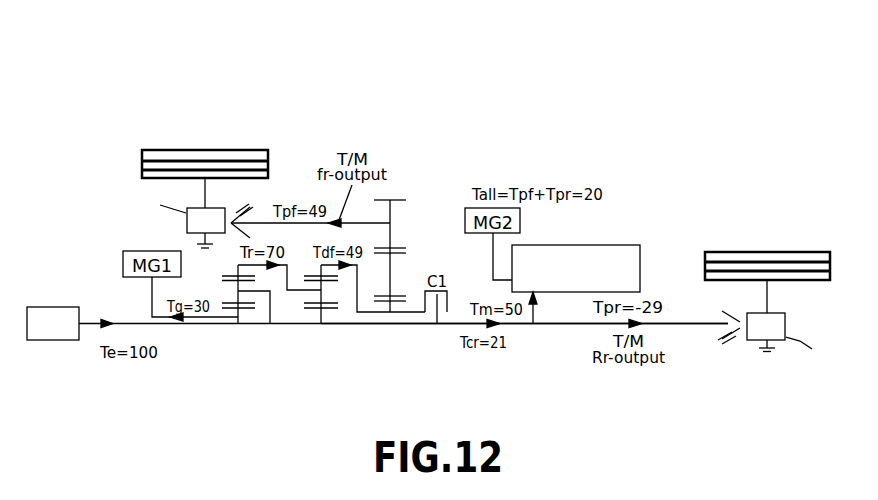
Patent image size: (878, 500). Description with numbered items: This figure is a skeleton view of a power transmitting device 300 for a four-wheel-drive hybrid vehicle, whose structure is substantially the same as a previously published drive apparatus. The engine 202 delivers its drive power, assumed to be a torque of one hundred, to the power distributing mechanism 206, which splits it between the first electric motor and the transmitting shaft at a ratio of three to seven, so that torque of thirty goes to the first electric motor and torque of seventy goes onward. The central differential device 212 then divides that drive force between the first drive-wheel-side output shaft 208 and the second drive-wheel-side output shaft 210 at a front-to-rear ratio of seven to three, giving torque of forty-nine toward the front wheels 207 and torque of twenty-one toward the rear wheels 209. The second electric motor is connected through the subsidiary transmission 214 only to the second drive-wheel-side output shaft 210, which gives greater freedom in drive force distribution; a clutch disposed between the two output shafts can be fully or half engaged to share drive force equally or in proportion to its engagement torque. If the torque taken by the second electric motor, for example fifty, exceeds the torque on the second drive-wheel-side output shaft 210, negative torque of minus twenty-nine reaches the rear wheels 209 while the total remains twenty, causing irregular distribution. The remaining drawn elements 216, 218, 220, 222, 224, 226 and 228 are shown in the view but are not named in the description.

The power transmitting device 300 is at (444, 74).
The engine 202 is at (53, 340).
The power distributing mechanism 206 is at (237, 342).
The front wheels 207 is at (248, 149).
The first drive-wheel-side output shaft 208 is at (358, 269).
The rear wheels 209 is at (728, 252).
The second drive-wheel-side output shaft 210 is at (363, 326).
The central differential device 212 is at (322, 342).
The subsidiary transmission 214 is at (640, 258).
The front output gear shaft 216 is at (432, 231).
The front output line 218 is at (273, 225).
The front differential 220 is at (187, 227).
The front axle 222 is at (205, 195).
The rear output line 224 is at (570, 327).
The rear differential 226 is at (786, 328).
The rear axle 228 is at (767, 297).